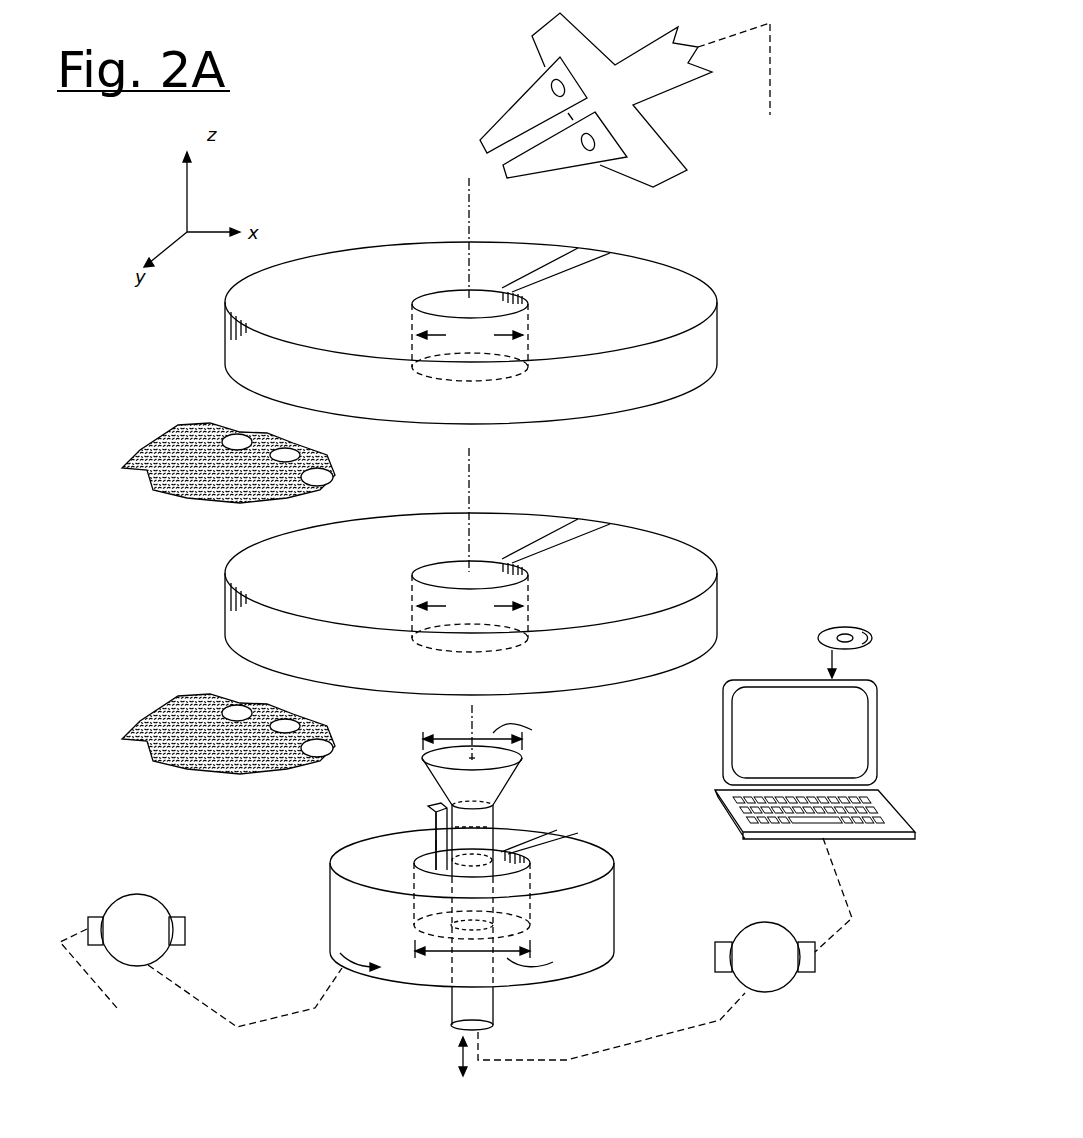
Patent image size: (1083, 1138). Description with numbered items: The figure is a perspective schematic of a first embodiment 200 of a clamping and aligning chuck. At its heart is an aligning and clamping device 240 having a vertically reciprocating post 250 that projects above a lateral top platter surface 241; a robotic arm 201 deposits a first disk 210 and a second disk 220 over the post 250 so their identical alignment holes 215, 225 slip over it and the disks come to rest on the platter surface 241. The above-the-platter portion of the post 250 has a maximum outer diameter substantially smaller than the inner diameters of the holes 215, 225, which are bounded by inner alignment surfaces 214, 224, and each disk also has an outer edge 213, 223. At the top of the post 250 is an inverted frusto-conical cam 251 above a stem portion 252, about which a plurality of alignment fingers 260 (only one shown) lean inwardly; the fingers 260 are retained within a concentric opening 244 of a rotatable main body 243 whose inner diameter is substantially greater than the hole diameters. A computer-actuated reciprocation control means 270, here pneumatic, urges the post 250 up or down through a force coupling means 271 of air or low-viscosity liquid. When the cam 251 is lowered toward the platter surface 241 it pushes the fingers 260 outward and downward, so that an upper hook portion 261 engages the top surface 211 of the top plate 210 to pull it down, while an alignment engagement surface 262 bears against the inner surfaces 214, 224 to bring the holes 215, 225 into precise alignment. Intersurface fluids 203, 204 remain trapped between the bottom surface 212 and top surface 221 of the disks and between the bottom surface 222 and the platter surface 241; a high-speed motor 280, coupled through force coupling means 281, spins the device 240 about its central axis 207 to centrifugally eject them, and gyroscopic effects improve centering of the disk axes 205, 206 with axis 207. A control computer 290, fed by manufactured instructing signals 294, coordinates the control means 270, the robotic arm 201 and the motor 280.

The first embodiment 200 is at (282, 173).
The robotic arm 201 is at (478, 118).
The intersurface fluid 203 is at (130, 493).
The intersurface fluid 204 is at (130, 765).
The central vertical axis 205 is at (462, 178).
The central vertical axis 206 is at (462, 450).
The central axis 207 is at (465, 712).
The disk 210 is at (477, 338).
The top surface 211 is at (678, 278).
The bottom surface 212 is at (678, 402).
The outer edge 213 is at (225, 344).
The inner alignment surface 214 is at (490, 296).
The alignment hole 215 is at (447, 290).
The disk 220 is at (477, 615).
The top surface 221 is at (678, 549).
The bottom surface 222 is at (678, 686).
The outer edge 223 is at (225, 616).
The inner alignment surface 224 is at (490, 567).
The alignment hole 225 is at (447, 561).
The aligning and clamping device 240 is at (516, 892).
The top platter surface 241 is at (580, 852).
The rotatable main body 243 is at (616, 878).
The concentric opening 244 is at (500, 852).
The vertically reciprocating post 250 is at (450, 995).
The frusto-conical cam 251 is at (425, 770).
The stem portion 252 is at (497, 806).
The alignment finger 260 is at (425, 806).
The upper hook portion 261 is at (428, 816).
The alignment engagement surface 262 is at (435, 840).
The reciprocation control means 270 is at (752, 920).
The force coupling means 271 is at (540, 1060).
The high-speed motor 280 is at (188, 931).
The force coupling means 281 is at (225, 1017).
The control computer 290 is at (786, 750).
The instructing signals 294 is at (845, 641).